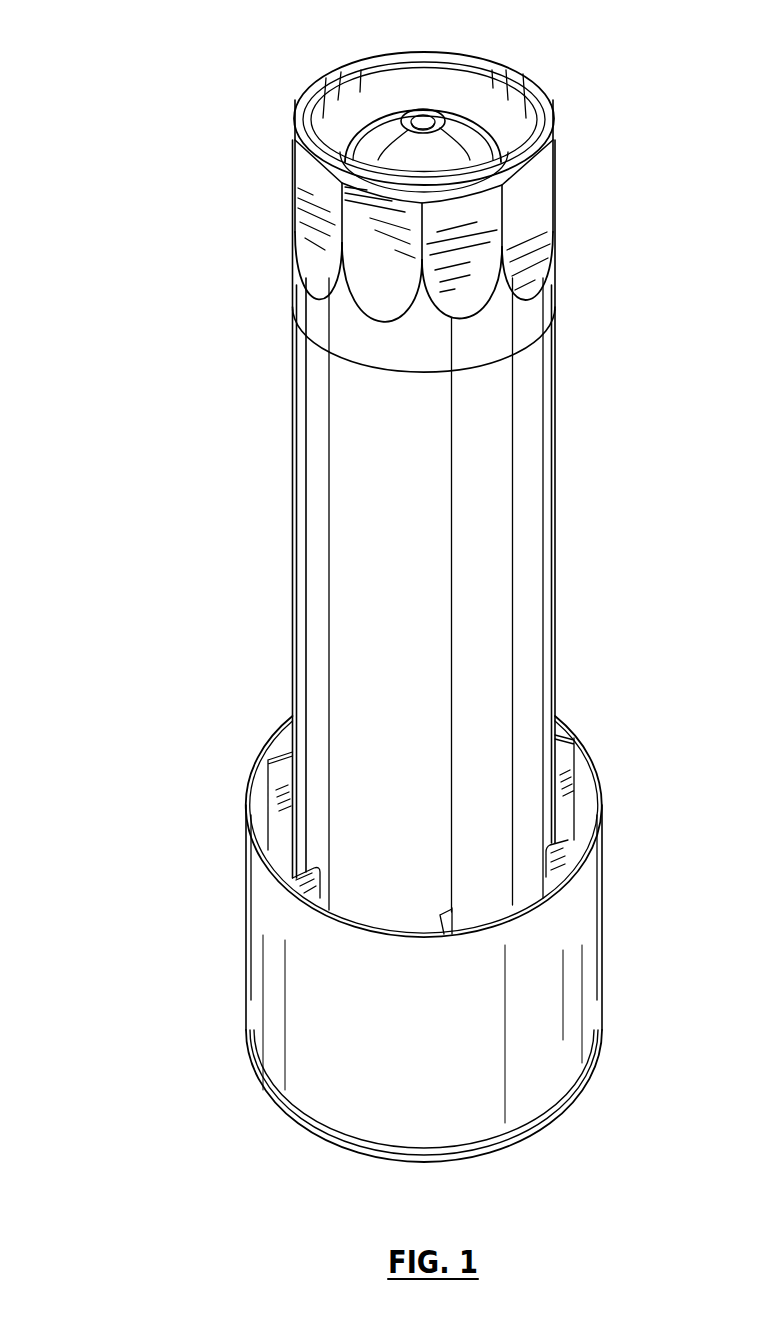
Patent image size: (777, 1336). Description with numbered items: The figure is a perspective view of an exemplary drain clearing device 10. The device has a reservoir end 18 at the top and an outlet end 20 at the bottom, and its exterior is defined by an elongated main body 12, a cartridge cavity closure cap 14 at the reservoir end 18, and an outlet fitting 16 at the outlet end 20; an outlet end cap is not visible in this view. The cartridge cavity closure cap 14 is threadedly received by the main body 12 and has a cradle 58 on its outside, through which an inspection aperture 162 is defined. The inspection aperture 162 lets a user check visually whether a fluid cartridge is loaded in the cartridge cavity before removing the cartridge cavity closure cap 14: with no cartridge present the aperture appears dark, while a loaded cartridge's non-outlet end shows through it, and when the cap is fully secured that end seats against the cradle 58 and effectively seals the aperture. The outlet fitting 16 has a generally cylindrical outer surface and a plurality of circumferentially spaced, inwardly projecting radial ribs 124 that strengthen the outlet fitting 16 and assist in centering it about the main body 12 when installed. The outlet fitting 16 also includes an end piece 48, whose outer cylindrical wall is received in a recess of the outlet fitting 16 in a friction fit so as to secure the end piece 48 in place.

The drain clearing device 10 is at (128, 286).
The main body 12 is at (307, 511).
The cartridge cavity closure cap 14 is at (317, 246).
The outlet fitting 16 is at (270, 933).
The reservoir end 18 is at (278, 111).
The outlet end 20 is at (283, 1130).
The end piece 48 is at (257, 1058).
The cradle 58 is at (382, 123).
The radial ribs 124 is at (607, 823).
The inspection aperture 162 is at (424, 118).